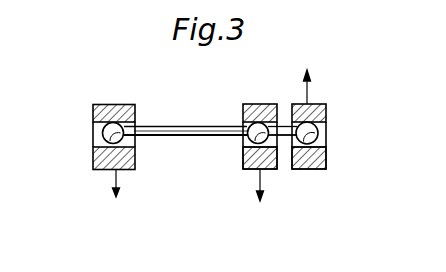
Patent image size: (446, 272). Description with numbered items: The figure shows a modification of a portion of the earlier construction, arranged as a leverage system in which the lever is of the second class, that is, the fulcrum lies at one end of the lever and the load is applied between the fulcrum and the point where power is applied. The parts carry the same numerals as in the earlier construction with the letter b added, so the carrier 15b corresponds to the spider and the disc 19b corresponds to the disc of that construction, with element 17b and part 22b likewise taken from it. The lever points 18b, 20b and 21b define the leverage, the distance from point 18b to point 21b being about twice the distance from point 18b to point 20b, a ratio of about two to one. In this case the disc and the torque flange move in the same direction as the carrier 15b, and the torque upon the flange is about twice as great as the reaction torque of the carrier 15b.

The carrier 15b is at (98, 170).
The lower housing member of right bearing 17b is at (303, 169).
The lever point 18b is at (327, 121).
The disc 19b is at (250, 168).
The lever point 20b is at (265, 169).
The lever point 21b is at (92, 130).
The shaft 22b is at (178, 126).